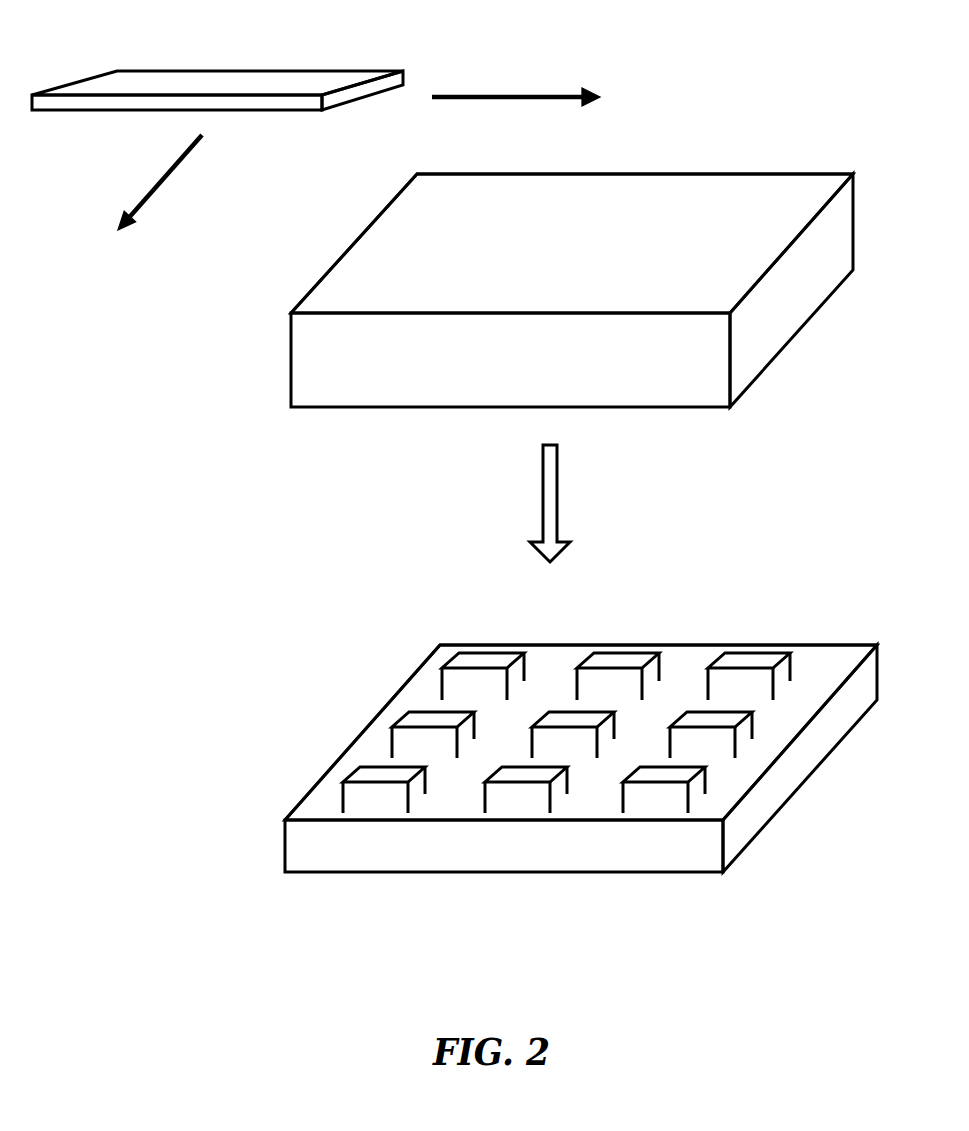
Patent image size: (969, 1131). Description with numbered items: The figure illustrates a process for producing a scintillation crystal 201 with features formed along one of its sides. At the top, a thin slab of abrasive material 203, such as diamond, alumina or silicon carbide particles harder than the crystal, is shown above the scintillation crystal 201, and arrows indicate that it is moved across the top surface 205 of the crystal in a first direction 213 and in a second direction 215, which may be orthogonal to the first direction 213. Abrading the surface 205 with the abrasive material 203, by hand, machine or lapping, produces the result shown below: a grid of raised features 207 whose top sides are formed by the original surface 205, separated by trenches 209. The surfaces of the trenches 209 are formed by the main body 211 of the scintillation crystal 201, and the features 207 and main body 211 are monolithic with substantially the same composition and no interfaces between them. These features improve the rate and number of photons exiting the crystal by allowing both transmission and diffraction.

The scintillation crystal 201 is at (733, 173).
The abrasive material 203 is at (240, 70).
The surface 205 is at (624, 189).
The features 207 is at (627, 650).
The trenches 209 is at (689, 654).
The main body 211 is at (779, 793).
The first direction 213 is at (498, 95).
The second direction 215 is at (170, 177).